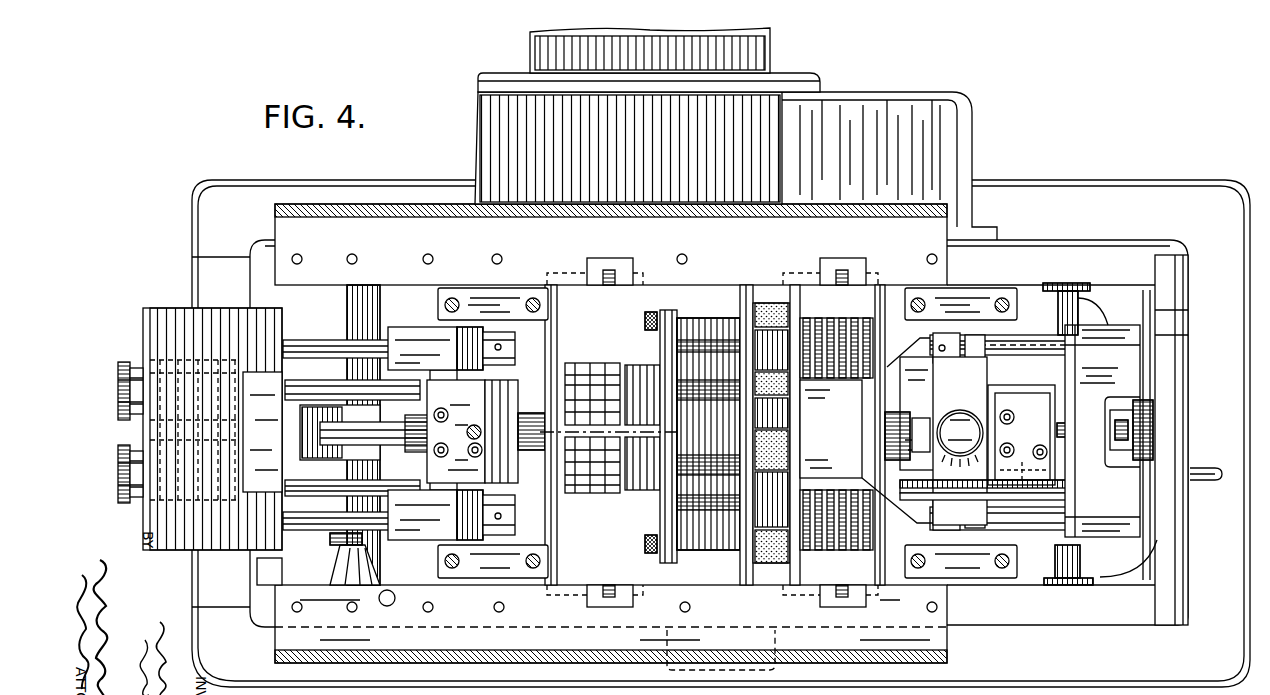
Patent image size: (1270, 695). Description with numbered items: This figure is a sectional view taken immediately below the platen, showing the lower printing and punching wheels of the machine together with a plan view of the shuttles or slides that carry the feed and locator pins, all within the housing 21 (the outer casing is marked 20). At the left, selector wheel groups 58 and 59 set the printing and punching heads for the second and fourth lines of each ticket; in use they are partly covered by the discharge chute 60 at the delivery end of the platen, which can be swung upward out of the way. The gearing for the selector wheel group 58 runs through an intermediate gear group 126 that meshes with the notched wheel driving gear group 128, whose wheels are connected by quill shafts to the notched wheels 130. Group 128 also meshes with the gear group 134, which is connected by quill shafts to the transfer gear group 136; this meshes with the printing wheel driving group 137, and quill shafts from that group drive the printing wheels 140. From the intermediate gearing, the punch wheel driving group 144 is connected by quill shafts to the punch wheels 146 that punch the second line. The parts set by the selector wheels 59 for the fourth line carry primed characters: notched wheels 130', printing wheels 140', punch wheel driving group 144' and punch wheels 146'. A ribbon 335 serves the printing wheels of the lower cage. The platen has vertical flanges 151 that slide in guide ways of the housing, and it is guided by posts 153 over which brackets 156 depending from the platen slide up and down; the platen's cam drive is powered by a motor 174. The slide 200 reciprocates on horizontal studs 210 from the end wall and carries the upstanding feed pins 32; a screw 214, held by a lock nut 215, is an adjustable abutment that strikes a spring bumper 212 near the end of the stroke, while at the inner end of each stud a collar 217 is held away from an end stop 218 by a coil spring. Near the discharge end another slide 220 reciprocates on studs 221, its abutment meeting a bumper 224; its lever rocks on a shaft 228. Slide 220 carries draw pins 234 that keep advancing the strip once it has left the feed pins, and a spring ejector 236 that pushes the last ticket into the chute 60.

The housing 20 is at (1175, 182).
The housing 21 is at (1150, 250).
The motor 174 is at (773, 52).
The discharge chute 60 is at (143, 326).
The selector wheel group 58 is at (115, 392).
The selector wheel group 59 is at (115, 475).
The studs 221 is at (298, 340).
The bumper 224 is at (290, 404).
The last ticket ejector spring 236 is at (385, 479).
The shaft 228 is at (382, 326).
The slide 220 is at (432, 526).
The draw pins 234 is at (456, 402).
The brackets 156 is at (481, 297).
The vertical flanges 151 is at (615, 283).
The notched wheel driving gear group 128 is at (685, 320).
The gear group 134 is at (706, 345).
The transfer gear group 136 is at (730, 333).
The punch wheel driving group 144 is at (633, 362).
The punch wheel driving group 144' is at (633, 500).
The punch wheels 146 is at (592, 405).
The punch wheels 146' is at (595, 524).
The intermediate gear group 126 is at (700, 426).
The notched wheels 130 is at (836, 331).
The notched wheels 130' is at (836, 499).
The printing wheels 140 is at (792, 403).
The printing wheels 140' is at (809, 441).
The printing wheel driving group 137 is at (760, 430).
The posts 153 is at (948, 414).
The feed pins 32 is at (1036, 448).
The studs 210 is at (1020, 350).
The slide 200 is at (1125, 378).
The spring bumper 212 is at (1148, 421).
The screw 214 is at (1133, 440).
The lock nut 215 is at (1110, 462).
The collar 217 is at (972, 528).
The end stop 218 is at (945, 530).
The ribbon 335 is at (762, 565).